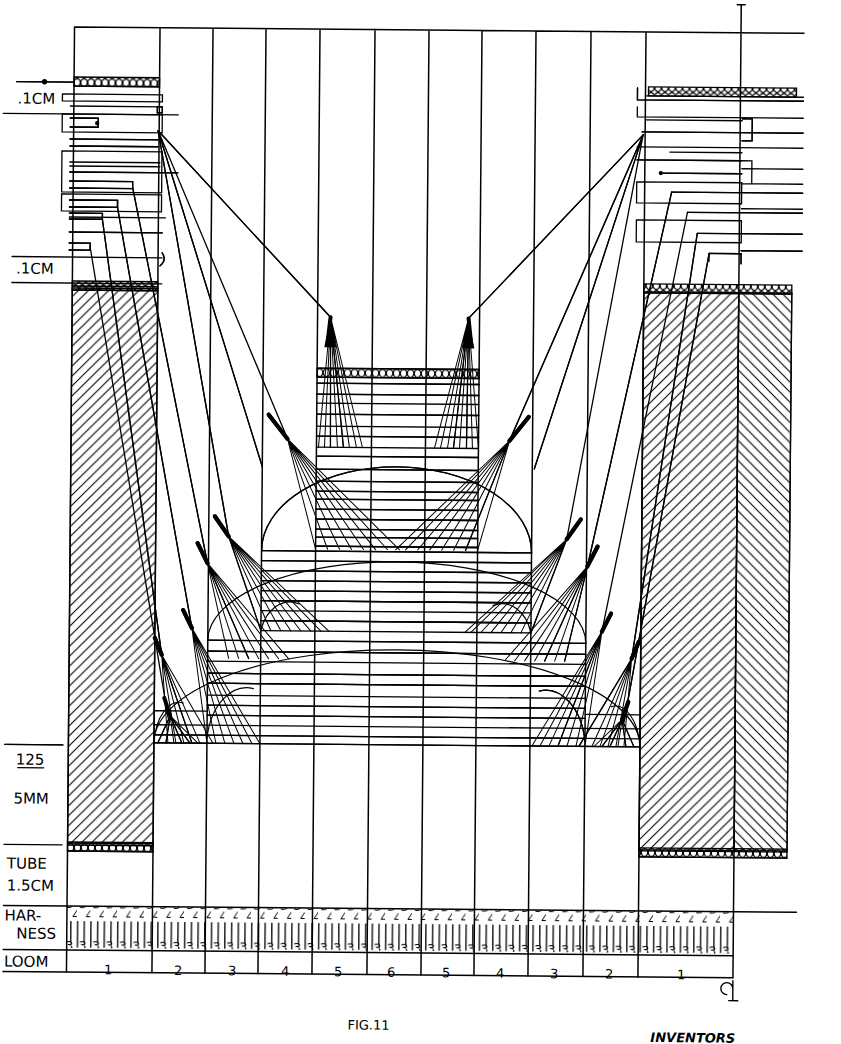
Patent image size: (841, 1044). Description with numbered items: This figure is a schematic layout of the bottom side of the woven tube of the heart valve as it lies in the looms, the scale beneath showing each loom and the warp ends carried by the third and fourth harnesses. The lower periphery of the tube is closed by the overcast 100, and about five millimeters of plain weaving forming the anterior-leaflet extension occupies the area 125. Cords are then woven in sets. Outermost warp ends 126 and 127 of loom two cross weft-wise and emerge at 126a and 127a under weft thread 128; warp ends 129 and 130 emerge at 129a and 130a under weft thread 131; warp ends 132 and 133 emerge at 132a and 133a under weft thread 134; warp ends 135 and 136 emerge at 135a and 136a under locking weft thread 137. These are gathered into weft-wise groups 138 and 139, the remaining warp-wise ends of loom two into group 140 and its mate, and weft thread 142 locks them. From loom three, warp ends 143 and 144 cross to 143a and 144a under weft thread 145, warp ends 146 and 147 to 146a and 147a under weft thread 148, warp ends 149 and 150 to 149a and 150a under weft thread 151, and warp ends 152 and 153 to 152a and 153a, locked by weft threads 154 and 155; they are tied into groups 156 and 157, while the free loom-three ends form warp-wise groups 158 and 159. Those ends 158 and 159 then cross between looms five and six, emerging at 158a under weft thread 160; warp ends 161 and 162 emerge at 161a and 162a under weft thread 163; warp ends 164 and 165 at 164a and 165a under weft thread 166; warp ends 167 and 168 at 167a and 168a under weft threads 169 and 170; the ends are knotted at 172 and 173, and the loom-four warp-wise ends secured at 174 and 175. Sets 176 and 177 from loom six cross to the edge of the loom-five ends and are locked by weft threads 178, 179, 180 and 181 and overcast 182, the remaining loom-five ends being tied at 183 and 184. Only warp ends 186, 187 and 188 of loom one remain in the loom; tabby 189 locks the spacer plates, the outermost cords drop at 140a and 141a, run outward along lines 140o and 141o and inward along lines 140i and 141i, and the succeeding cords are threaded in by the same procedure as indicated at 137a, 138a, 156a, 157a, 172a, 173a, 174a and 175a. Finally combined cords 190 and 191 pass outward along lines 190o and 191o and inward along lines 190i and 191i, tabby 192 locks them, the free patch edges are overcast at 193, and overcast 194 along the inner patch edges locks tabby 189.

The overcast 100 is at (96, 852).
The area of conventional weaving 125 is at (46, 771).
The outermost warp end 126 is at (628, 750).
The exit point of warp end 126 126a is at (281, 746).
The outermost warp end 127 is at (166, 748).
The exit point of warp end 127 127a is at (515, 746).
The weft thread 128 is at (570, 746).
The warp end 129 is at (610, 750).
The exit point of warp end 129 129a is at (321, 746).
The warp end 130 is at (179, 748).
The exit point of warp end 130 130a is at (470, 746).
The weft thread 131 is at (246, 705).
The warp end 132 is at (631, 685).
The yarn bundle 132a is at (211, 680).
The warp end 133 is at (166, 700).
The yarn 133a is at (481, 713).
The weft thread 134 is at (591, 660).
The warp end 135 is at (639, 660).
The exit point of warp end 135 135a is at (262, 691).
The warp end 136 is at (201, 730).
The exit point of warp end 136 136a is at (461, 690).
The locking weft thread 137 is at (196, 655).
The yarn end 137a is at (67, 219).
The group of weft-wise warp ends 138 is at (596, 625).
The threading point of cord 138 138a is at (726, 233).
The group of weft-wise warp ends 139 is at (190, 628).
The group of warp-wise warp ends 140 is at (651, 700).
The drop point of cord 140 140a is at (710, 262).
The outward threading line of cord 140 140o is at (737, 258).
The inward threading line of cord 140 140i is at (790, 255).
The outward threading line of cord 141 141o is at (67, 236).
The drop point of cord 141 141a is at (67, 249).
The inward threading line of cord 141 141i is at (163, 264).
The weft thread 142 is at (346, 657).
The outermost warp end 143 is at (476, 648).
The exit point of warp end 143 143a is at (306, 690).
The outermost warp end 144 is at (288, 655).
The exit point of warp end 144 144a is at (419, 700).
The weft thread 145 is at (561, 645).
The warp end 146 is at (612, 600).
The exit point of warp end 146 146a is at (316, 628).
The warp end 147 is at (215, 630).
The exit point of warp end 147 147a is at (421, 628).
The weft thread 148 is at (581, 600).
The warp end 149 is at (590, 600).
The exit point of warp end 149 149a is at (316, 603).
The warp end 150 is at (251, 605).
The exit point of warp end 150 150a is at (421, 604).
The weft thread 151 is at (421, 587).
The warp end 152 is at (554, 538).
The exit point of warp end 152 152a is at (371, 585).
The warp end 153 is at (251, 595).
The exit point of warp end 153 153a is at (421, 580).
The weft thread 154 is at (375, 573).
The weft thread 155 is at (361, 560).
The tied group of weft-wise warp ends 156 is at (563, 530).
The yarn end 156a is at (726, 193).
The tied group of weft-wise warp ends 157 is at (212, 506).
The yarn end 157a is at (67, 187).
The group of warp ends 158 is at (576, 570).
The exit point of warp ends 158 158a is at (366, 540).
The group of warp ends 159 is at (212, 540).
The weft thread 160 is at (378, 535).
The warp end 161 is at (547, 515).
The exit point of warp end 161 161a is at (345, 523).
The warp end 162 is at (269, 528).
The exit point of warp end 162 162a is at (421, 524).
The weft thread 163 is at (410, 515).
The warp end 164 is at (497, 497).
The exit point of warp end 164 164a is at (316, 500).
The warp end 165 is at (276, 490).
The exit point of warp end 165 165a is at (421, 509).
The weft thread 166 is at (493, 505).
The warp end 167 is at (521, 495).
The exit point of warp end 167 167a is at (371, 468).
The warp end 168 is at (316, 474).
The exit point of warp end 168 168a is at (413, 478).
The weft thread 169 is at (415, 475).
The weft thread 170 is at (300, 458).
The knotted group of weft-wise warp ends 172 is at (517, 448).
The yarn end 172a is at (657, 171).
The knotted group of weft-wise warp ends 173 is at (278, 414).
The yarn end 173a is at (158, 150).
The group of warp-wise warp ends 174 is at (546, 470).
The yarn end 174a is at (645, 180).
The group of warp-wise warp ends 175 is at (260, 461).
The yarn end 175a is at (160, 175).
The set of four warp ends 176 is at (432, 420).
The set of four warp ends 177 is at (352, 440).
The weft thread 178 is at (478, 392).
The weft thread 179 is at (381, 370).
The weft locking thread 180 is at (426, 371).
The weft locking thread 181 is at (405, 370).
The overcast 182 is at (355, 371).
The tied warp ends 183 is at (333, 308).
The tied warp ends 184 is at (472, 325).
The warp ends of loom one 186 is at (795, 506).
The warp ends of loom one 187 is at (674, 492).
The warp ends of loom one 188 is at (82, 459).
The tabby area 189 is at (50, 296).
The combined cords 190 is at (641, 133).
The outward line of cords 190 190o is at (641, 131).
The inward line of cords 190 190i is at (780, 125).
The combined cords 191 is at (160, 133).
The outward line of cords 191 191o is at (93, 127).
The inward line of cords 191 191i is at (160, 110).
The tabby 192 is at (41, 83).
The overcast 193 is at (122, 82).
The overcast 194 is at (179, 293).